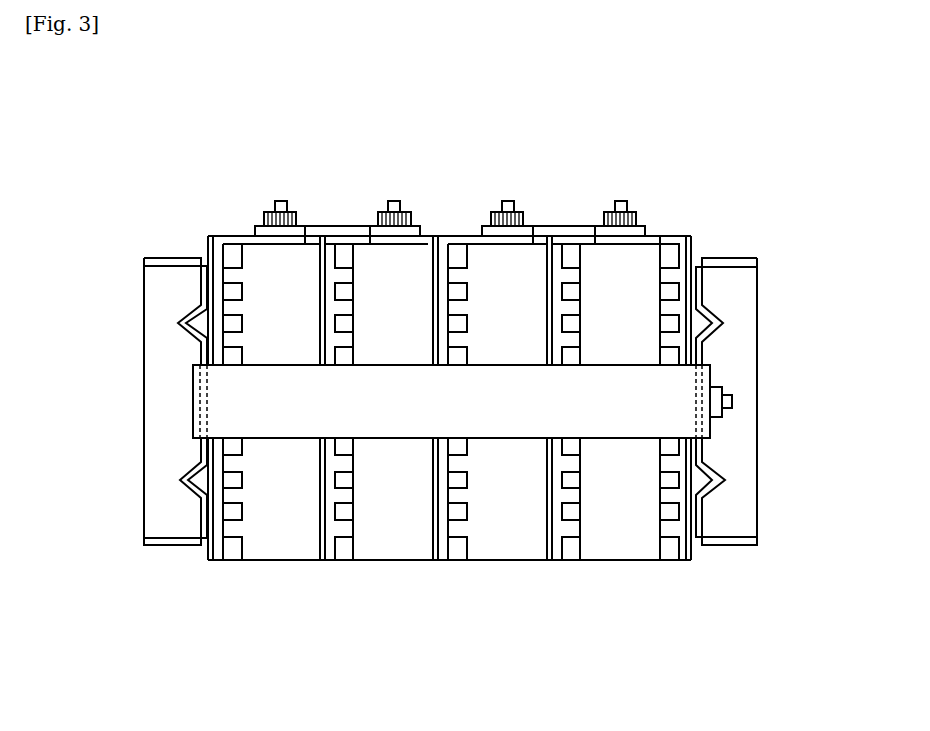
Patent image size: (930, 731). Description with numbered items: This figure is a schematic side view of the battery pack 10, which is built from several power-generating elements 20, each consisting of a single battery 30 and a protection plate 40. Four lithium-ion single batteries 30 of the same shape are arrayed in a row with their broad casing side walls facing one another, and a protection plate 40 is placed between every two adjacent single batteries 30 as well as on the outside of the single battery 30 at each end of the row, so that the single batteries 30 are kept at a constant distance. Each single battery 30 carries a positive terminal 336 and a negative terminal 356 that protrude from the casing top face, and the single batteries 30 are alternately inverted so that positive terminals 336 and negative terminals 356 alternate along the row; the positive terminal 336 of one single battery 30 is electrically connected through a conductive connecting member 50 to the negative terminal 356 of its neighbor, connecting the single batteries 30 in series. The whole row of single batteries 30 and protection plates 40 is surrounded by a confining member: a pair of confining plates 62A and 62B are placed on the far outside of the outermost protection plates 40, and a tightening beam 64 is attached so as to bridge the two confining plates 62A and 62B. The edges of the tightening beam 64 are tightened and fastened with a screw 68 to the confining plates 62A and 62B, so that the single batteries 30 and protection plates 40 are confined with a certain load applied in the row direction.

The battery pack 10 is at (706, 160).
The power-generating element 20 is at (237, 655).
The single battery 30 is at (310, 571).
The protection plate 40 is at (224, 571).
The conductive connecting member 50 is at (332, 228).
The positive terminal 336 is at (281, 201).
The negative terminal 356 is at (393, 201).
The confining plate 62A is at (165, 258).
The confining plate 62B is at (728, 257).
The tightening beam 64 is at (630, 440).
The screw 68 is at (723, 383).